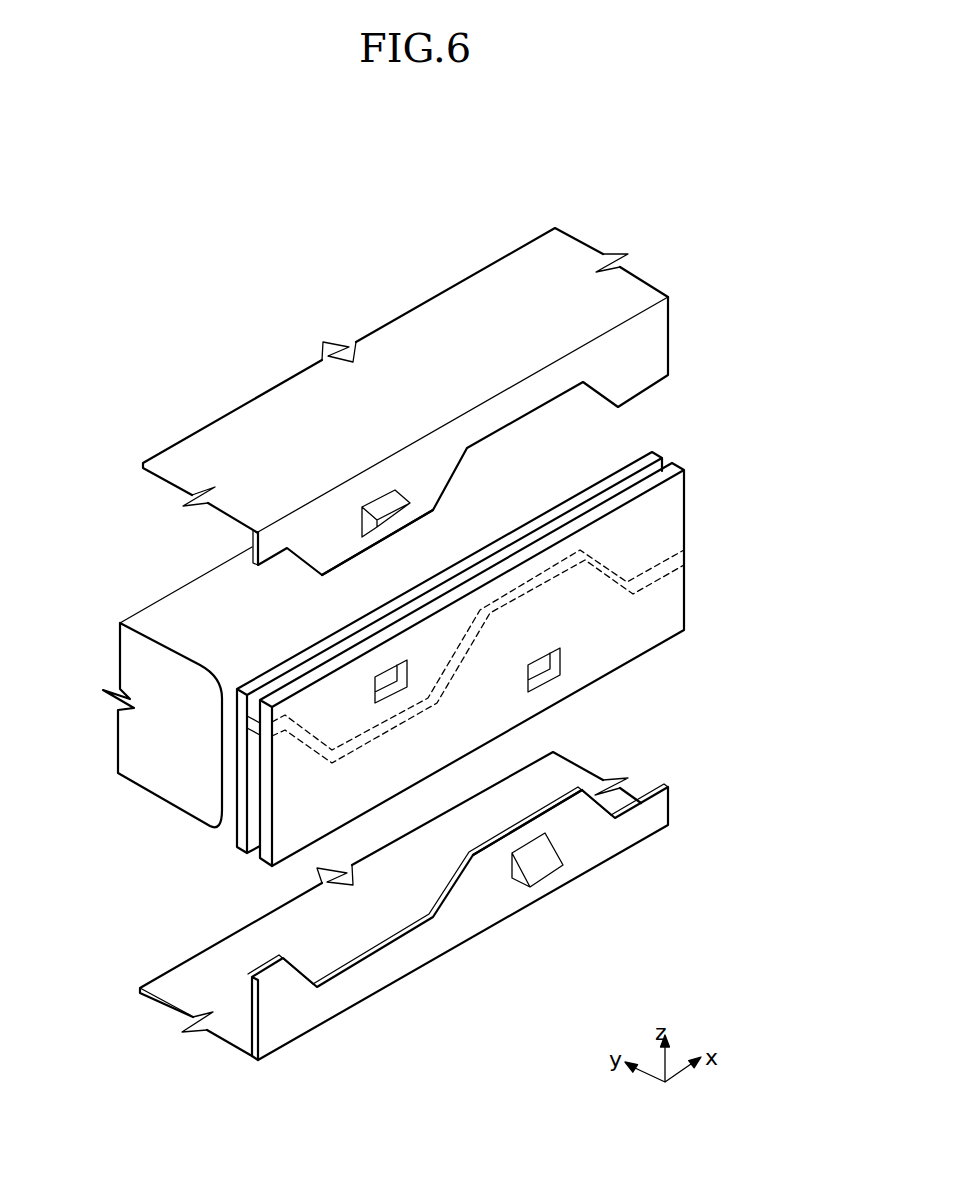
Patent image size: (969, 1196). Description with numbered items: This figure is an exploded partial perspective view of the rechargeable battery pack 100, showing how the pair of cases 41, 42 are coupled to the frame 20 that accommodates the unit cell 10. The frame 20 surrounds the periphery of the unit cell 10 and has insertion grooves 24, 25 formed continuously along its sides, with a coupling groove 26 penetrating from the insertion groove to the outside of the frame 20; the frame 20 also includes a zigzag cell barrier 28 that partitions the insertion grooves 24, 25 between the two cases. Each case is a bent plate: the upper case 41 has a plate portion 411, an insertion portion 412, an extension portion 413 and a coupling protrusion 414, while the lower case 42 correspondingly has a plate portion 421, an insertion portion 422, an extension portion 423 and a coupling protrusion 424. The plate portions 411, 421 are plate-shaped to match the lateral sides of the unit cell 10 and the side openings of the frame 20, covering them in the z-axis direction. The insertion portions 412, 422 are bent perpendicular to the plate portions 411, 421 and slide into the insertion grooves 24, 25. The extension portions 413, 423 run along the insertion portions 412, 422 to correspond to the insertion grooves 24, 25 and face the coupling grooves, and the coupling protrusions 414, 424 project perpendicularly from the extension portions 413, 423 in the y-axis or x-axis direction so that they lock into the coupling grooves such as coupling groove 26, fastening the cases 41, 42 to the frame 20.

The rechargeable battery pack 100 is at (226, 215).
The unit cell 10 is at (135, 663).
The frame 20 is at (436, 679).
The insertion groove 24 is at (287, 678).
The insertion groove 25 is at (255, 775).
The coupling groove 26 is at (402, 672).
The cell barrier 28 is at (308, 748).
The case 41 is at (427, 395).
The plate portion 411 is at (460, 308).
The insertion portion 412 is at (475, 427).
The extension portion 413 is at (330, 553).
The coupling protrusion 414 is at (421, 496).
The case 42 is at (437, 877).
The plate portion 421 is at (575, 773).
The insertion portion 422 is at (635, 832).
The extension portion 423 is at (485, 877).
The coupling protrusion 424 is at (566, 878).